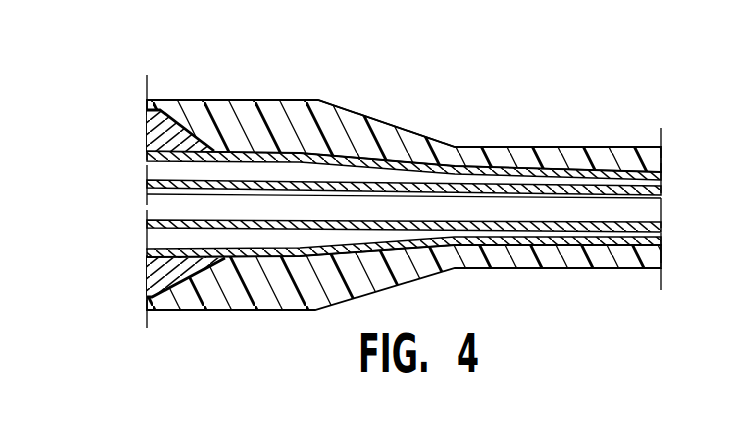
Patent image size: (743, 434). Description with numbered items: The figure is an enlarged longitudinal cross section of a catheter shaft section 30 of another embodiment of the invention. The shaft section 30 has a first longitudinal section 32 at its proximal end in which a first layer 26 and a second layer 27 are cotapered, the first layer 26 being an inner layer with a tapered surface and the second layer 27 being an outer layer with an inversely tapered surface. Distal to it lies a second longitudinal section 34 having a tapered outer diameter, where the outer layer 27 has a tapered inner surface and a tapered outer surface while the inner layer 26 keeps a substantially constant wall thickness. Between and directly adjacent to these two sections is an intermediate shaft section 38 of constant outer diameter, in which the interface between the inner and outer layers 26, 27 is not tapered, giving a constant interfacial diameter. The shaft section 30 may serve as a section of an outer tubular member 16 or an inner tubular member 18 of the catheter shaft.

The shaft section 30 is at (389, 79).
The first longitudinal section 32 is at (184, 100).
The intermediate shaft section 38 is at (280, 100).
The second longitudinal section 34 is at (412, 132).
The second layer 27 is at (652, 157).
The first layer 26 is at (655, 177).
The inner tubular member 18 is at (162, 228).
The outer tubular member 16 is at (160, 312).